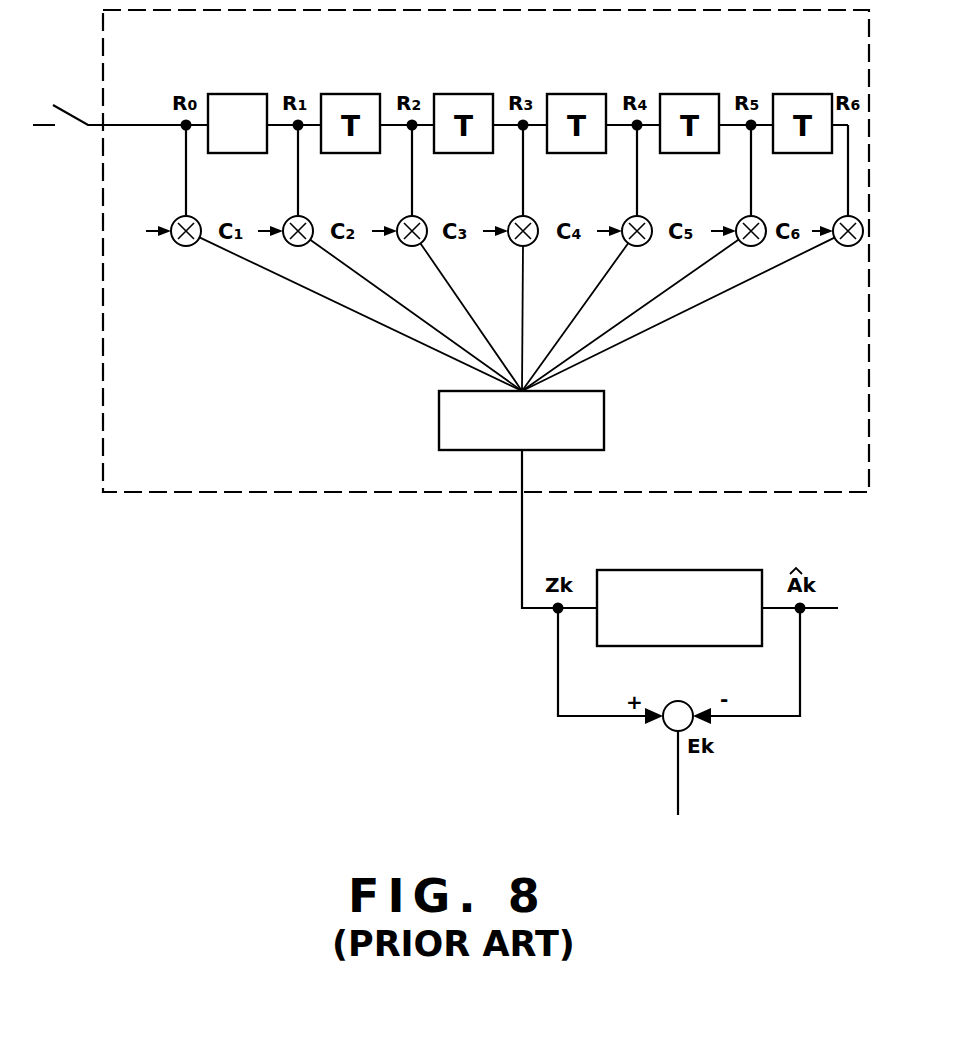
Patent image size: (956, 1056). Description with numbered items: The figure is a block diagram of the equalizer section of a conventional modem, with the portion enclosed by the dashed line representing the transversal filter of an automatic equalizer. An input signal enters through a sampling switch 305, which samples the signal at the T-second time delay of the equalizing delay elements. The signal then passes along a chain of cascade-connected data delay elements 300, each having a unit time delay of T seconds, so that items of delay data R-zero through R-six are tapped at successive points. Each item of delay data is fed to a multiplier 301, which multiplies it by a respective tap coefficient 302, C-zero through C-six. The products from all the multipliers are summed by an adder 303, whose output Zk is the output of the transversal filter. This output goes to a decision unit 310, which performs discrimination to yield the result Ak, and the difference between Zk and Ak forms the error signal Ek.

The data delay element 300 is at (228, 93).
The multiplier 301 is at (180, 244).
The tap coefficient 302 is at (127, 212).
The adder 303 is at (605, 424).
The sampling switch 305 is at (68, 127).
The decision unit 310 is at (690, 570).